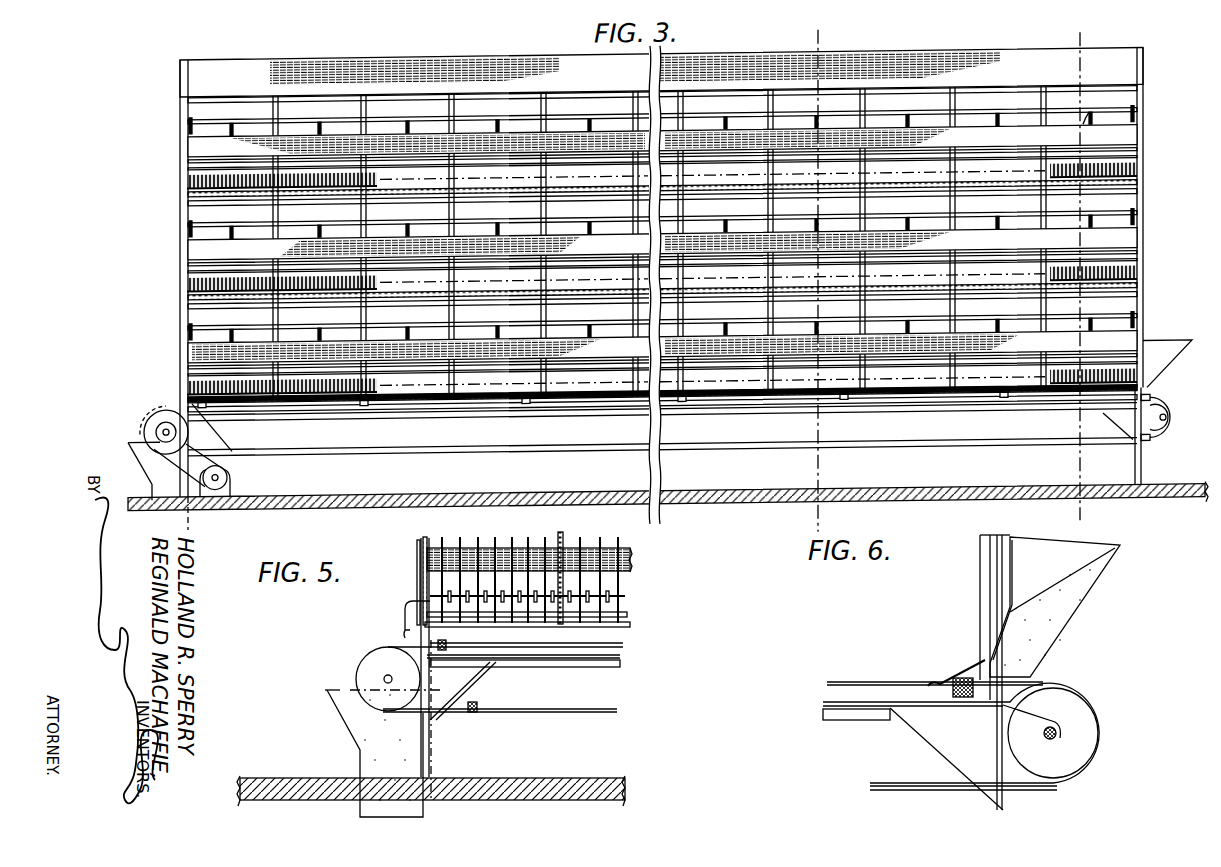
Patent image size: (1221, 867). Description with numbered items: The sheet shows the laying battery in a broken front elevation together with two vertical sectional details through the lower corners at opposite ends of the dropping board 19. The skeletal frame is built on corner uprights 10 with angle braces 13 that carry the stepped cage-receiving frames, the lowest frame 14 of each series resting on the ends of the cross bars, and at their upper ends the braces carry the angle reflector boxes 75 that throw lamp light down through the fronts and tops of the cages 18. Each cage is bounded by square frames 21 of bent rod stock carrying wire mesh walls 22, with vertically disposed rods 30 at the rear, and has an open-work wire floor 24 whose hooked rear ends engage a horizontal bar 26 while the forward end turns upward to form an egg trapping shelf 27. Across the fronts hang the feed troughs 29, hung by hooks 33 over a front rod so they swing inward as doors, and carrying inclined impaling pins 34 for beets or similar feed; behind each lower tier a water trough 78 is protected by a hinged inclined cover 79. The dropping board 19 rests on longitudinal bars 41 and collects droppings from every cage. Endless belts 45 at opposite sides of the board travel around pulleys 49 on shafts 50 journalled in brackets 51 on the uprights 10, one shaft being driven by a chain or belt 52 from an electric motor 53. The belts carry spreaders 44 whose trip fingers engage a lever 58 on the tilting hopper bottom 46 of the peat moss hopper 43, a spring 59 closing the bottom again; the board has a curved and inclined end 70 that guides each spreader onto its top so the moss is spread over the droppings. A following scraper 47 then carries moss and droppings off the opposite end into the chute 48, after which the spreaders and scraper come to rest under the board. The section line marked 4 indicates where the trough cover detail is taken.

In FIG. 3, the section line 4- 4 is at (836, 50).
In FIG. 3, the corner upright 10 is at (186, 402).
In FIG. 5, the corner upright 10 is at (431, 774).
In FIG. 6, the corner upright 10 is at (980, 553).
In FIG. 3, the angle brace 13 is at (180, 95).
In FIG. 3, the lowest frame 14 is at (1096, 52).
In FIG. 5, the lowest frame 14 is at (404, 622).
In FIG. 5, the cage 18 is at (417, 578).
In FIG. 3, the dropping board 19 is at (900, 422).
In FIG. 5, the dropping board 19 is at (556, 662).
In FIG. 6, the dropping board 19 is at (843, 715).
In FIG. 5, the square frame 21 is at (562, 536).
In FIG. 5, the wire mesh wall 22 is at (422, 555).
In FIG. 5, the cage floor 24 is at (628, 615).
In FIG. 5, the horizontal bar 26 is at (628, 597).
In FIG. 3, the egg trapping shelf 27 is at (187, 181).
In FIG. 3, the feed trough 29 is at (662, 244).
In FIG. 5, the vertically disposed rod 30 is at (462, 542).
In FIG. 3, the hook 33 is at (189, 127).
In FIG. 3, the impaling pin 34 is at (1088, 128).
In FIG. 5, the longitudinal bar 41 is at (608, 668).
In FIG. 6, the longitudinal bar 41 is at (870, 720).
In FIG. 3, the hopper 43 is at (1170, 353).
In FIG. 6, the hopper 43 is at (1092, 583).
In FIG. 3, the spreader 44 is at (364, 412).
In FIG. 5, the spreader 44 is at (478, 713).
In FIG. 3, the endless belt 45 is at (622, 450).
In FIG. 5, the endless belt 45 is at (615, 712).
In FIG. 6, the endless belt 45 is at (882, 786).
In FIG. 6, the tilting hopper bottom 46 is at (1046, 684).
In FIG. 3, the scraper 47 is at (1005, 412).
In FIG. 5, the scraper 47 is at (443, 652).
In FIG. 3, the chute 48 is at (128, 445).
In FIG. 5, the chute 48 is at (325, 715).
In FIG. 3, the pulley 49 is at (158, 414).
In FIG. 5, the pulley 49 is at (372, 660).
In FIG. 6, the pulley 49 is at (1090, 735).
In FIG. 3, the shaft 50 is at (160, 430).
In FIG. 5, the shaft 50 is at (384, 679).
In FIG. 6, the shaft 50 is at (1052, 741).
In FIG. 3, the bracket 51 is at (1160, 445).
In FIG. 3, the chain or belt 52 is at (170, 460).
In FIG. 3, the electric motor 53 is at (228, 478).
In FIG. 6, the lever 58 is at (945, 680).
In FIG. 6, the spring 59 is at (1040, 665).
In FIG. 6, the curved and inclined end 70 is at (1035, 720).
In FIG. 3, the reflector box 75 is at (915, 72).
In FIG. 5, the water trough 78 is at (632, 576).
In FIG. 5, the hinged inclined cover 79 is at (630, 562).